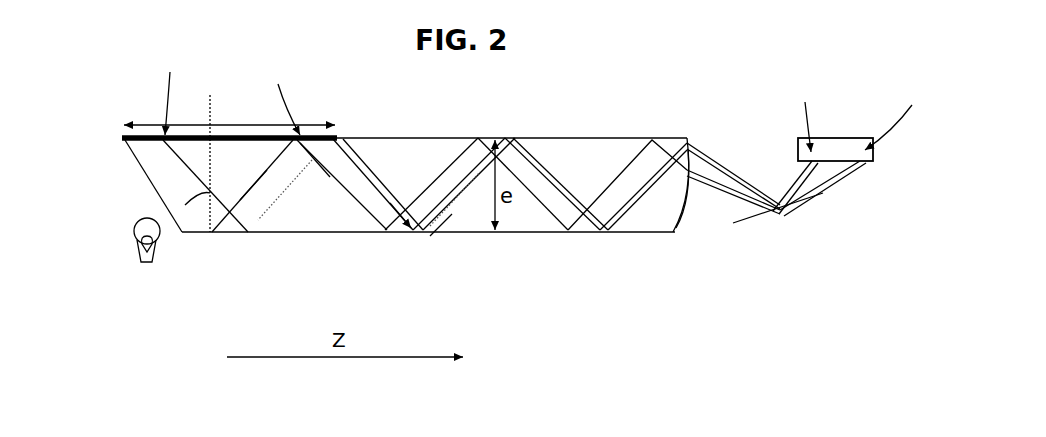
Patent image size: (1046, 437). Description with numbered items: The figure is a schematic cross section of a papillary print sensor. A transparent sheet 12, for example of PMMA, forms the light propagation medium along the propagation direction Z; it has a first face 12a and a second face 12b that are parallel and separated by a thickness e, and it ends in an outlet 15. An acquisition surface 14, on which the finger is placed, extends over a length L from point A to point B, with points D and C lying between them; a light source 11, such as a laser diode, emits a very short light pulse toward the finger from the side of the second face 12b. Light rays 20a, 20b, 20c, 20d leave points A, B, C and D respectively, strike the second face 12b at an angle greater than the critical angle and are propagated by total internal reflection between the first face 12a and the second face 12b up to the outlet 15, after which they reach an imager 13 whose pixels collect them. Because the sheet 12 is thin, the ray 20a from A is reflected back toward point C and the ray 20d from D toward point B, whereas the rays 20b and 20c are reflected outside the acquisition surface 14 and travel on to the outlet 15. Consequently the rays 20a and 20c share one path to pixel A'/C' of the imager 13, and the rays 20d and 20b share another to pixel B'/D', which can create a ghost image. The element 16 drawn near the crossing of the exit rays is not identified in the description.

The light source 11 is at (109, 249).
The sheet 12 is at (237, 236).
The first face 12a is at (575, 134).
The second face 12b is at (519, 237).
The imager 13 is at (836, 137).
The acquisition surface 14 is at (233, 135).
The outlet 15 is at (692, 219).
The focal point / crossing point 16 is at (781, 212).
The light ray 20a is at (268, 184).
The light ray 20b is at (453, 216).
The light ray 20c is at (329, 178).
The light ray 20d is at (410, 236).